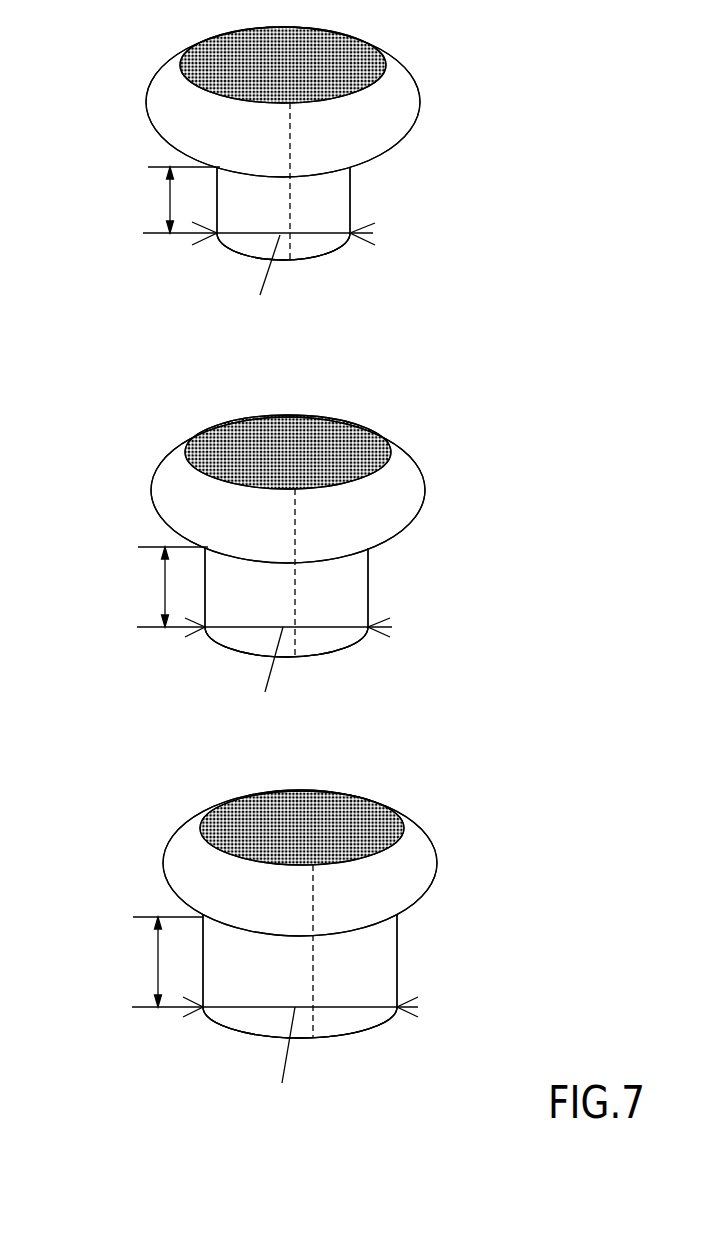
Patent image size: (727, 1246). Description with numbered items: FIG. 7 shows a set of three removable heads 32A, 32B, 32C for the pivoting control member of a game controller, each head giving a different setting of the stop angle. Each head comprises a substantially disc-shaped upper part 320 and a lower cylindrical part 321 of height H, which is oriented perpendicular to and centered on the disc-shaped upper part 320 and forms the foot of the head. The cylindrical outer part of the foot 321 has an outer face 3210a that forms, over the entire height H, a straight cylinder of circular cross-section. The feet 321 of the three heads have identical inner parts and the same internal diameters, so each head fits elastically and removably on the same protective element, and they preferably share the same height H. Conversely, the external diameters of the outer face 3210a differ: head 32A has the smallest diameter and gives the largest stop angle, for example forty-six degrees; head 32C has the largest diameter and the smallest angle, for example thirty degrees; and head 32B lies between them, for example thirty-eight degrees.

The disc-shaped upper part 320 is at (397, 93).
The cylindrical lower part 321 is at (356, 271).
The outer face 3210a is at (238, 198).
The removable head 32A is at (436, 160).
The removable head 32B is at (488, 527).
The removable head 32C is at (491, 885).